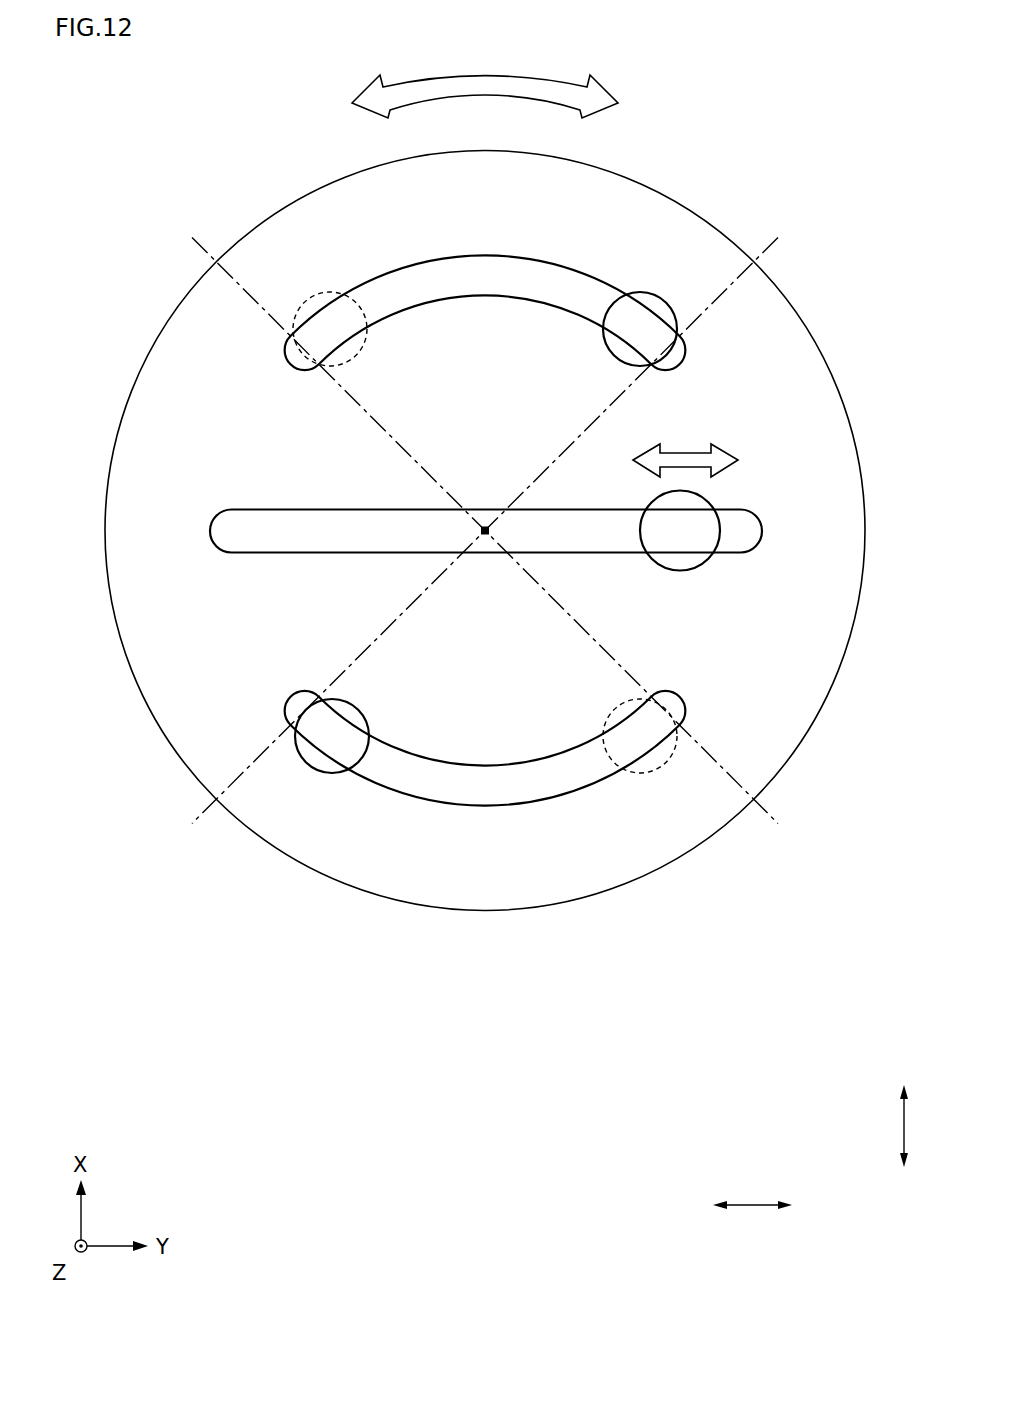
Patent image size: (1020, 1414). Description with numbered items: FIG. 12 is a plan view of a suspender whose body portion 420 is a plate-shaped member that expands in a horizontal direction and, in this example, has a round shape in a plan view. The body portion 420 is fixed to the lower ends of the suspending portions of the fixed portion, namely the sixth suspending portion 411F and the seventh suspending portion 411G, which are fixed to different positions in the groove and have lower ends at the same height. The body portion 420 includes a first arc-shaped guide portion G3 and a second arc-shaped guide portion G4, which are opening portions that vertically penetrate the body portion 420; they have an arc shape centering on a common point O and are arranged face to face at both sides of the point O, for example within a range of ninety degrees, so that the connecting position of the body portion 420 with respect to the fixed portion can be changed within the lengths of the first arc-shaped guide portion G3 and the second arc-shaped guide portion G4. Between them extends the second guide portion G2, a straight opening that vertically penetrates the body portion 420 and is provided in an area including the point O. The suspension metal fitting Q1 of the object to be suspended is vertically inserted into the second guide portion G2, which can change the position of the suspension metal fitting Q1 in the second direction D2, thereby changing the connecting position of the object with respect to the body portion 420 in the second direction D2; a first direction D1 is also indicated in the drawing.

The body portion 420 is at (821, 322).
The second arc-shaped guide portion G4 is at (392, 283).
The first arc-shaped guide portion G3 is at (492, 788).
The second guide portion G2 is at (253, 522).
The seventh suspending portion 411G is at (647, 310).
The sixth suspending portion 411F is at (318, 748).
The suspension metal fitting Q1 is at (680, 548).
The point O is at (485, 531).
The direction D1 is at (925, 1126).
The second direction D2 is at (752, 1224).